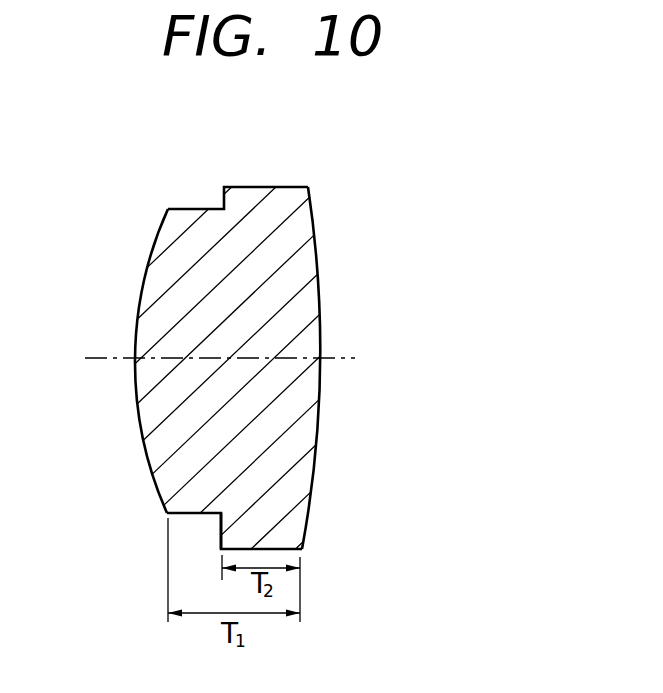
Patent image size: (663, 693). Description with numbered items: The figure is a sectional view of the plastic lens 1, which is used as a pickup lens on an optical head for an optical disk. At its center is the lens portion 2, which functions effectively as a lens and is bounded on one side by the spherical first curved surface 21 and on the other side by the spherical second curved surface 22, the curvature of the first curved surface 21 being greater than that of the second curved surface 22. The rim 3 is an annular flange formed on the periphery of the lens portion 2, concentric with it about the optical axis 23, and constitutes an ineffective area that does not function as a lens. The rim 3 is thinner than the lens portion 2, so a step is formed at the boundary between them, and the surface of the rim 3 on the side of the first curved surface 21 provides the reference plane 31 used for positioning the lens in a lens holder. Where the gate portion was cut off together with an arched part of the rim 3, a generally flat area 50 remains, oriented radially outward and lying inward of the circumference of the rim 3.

The plastic lens 1 is at (229, 333).
The lens portion 2 is at (272, 319).
The rim 3 is at (293, 529).
The first curved surface 21 is at (135, 385).
The second curved surface 22 is at (321, 405).
The optical axis 23 is at (107, 358).
The reference plane 31 is at (220, 530).
The generally flat area 50 is at (282, 185).